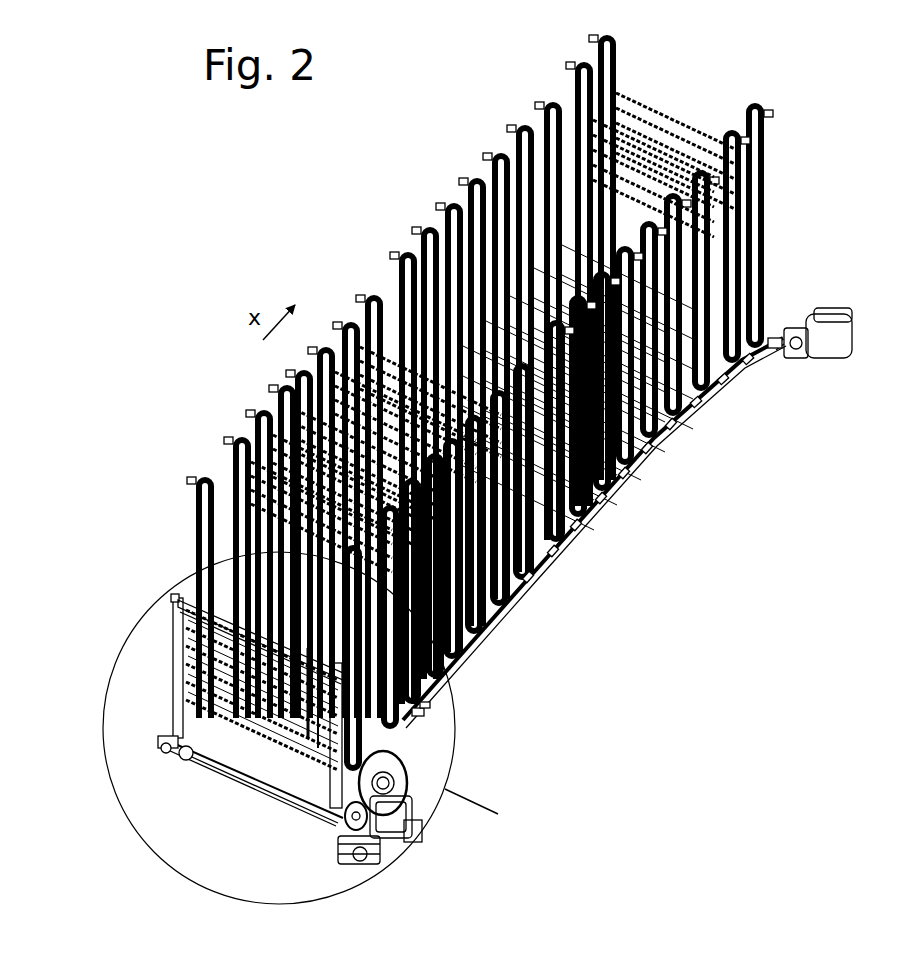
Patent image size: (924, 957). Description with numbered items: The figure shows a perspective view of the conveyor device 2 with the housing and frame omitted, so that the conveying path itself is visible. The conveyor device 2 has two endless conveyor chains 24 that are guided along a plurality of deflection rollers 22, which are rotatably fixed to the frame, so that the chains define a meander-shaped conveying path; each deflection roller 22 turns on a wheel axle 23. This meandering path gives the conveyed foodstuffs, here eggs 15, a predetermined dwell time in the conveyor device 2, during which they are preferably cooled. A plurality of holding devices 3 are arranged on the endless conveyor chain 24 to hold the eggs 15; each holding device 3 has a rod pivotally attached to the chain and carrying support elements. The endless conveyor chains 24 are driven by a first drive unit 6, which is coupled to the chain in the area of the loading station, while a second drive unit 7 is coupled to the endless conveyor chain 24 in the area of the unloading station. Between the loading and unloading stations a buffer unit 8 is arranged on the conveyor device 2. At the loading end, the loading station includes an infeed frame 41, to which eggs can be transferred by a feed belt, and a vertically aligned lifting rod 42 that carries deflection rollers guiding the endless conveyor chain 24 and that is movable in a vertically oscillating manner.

The conveyor device 2 is at (672, 88).
The holding device 3 is at (694, 138).
The deflection roller 22 is at (541, 93).
The wheel axle 23 is at (530, 103).
The endless conveyor chain 24 is at (392, 290).
The second drive unit 7 is at (850, 333).
The buffer unit 8 is at (423, 711).
The infeed frame 41 is at (140, 698).
The lifting rod 42 is at (165, 590).
The egg 15 is at (272, 695).
The first drive unit 6 is at (372, 853).